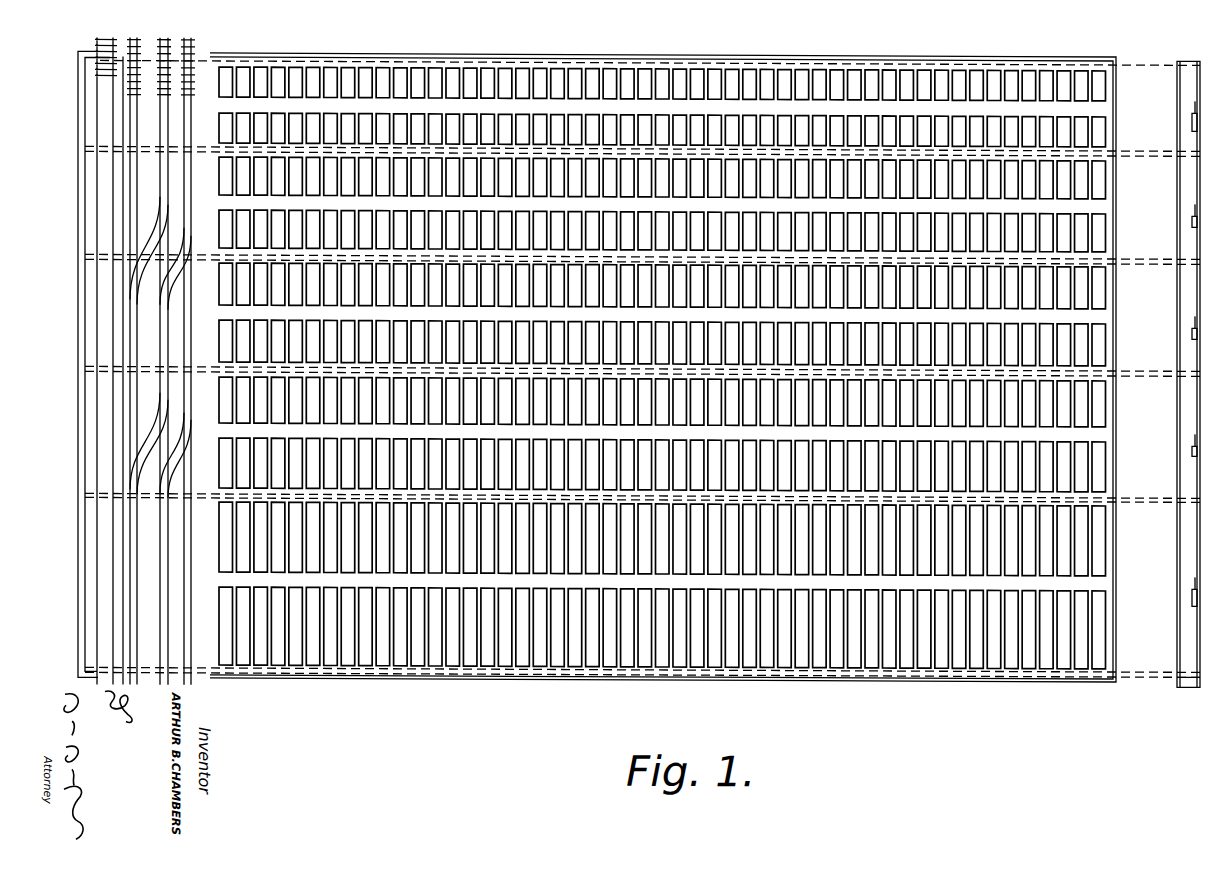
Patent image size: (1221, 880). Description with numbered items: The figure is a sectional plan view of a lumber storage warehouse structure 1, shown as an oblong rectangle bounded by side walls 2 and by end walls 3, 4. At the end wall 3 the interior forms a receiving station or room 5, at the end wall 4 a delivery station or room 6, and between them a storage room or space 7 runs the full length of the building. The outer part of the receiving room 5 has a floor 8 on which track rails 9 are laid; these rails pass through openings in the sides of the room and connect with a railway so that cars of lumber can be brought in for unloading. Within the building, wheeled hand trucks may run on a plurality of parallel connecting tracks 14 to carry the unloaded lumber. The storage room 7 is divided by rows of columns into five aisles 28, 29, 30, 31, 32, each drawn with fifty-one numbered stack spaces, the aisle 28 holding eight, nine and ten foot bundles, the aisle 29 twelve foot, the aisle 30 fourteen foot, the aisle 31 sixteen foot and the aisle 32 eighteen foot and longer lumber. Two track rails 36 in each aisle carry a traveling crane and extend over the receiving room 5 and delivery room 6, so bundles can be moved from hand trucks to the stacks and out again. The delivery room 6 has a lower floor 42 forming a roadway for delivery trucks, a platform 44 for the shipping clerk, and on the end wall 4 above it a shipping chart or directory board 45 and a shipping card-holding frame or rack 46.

The storage or warehouse structure 1 is at (696, 55).
The side walls 2 is at (826, 56).
The end wall 3 is at (80, 344).
The end wall 4 is at (1197, 556).
The receiving station or room 5 is at (170, 443).
The delivery station or room 6 is at (1141, 440).
The storage room or space 7 is at (795, 672).
The floor 8 is at (112, 610).
The track rails 9 is at (99, 47).
The tracks 14 is at (188, 50).
The aisle 28 is at (1118, 110).
The aisle 29 is at (1118, 211).
The aisle 30 is at (1118, 320).
The aisle 31 is at (692, 434).
The aisle 32 is at (1118, 586).
The track rails 36 is at (203, 368).
The floor 42 is at (1167, 662).
The platform 44 is at (1182, 632).
The shipping chart or directory board 45 is at (1192, 580).
The shipping card-holding frame or rack 46 is at (1191, 447).